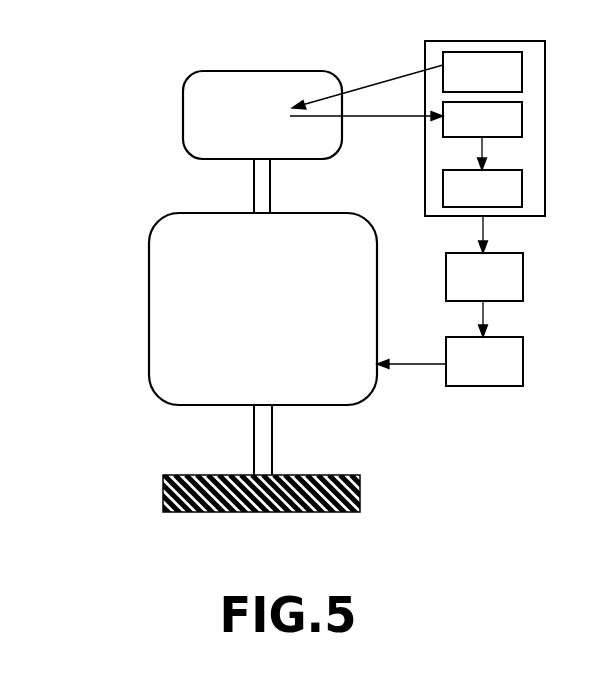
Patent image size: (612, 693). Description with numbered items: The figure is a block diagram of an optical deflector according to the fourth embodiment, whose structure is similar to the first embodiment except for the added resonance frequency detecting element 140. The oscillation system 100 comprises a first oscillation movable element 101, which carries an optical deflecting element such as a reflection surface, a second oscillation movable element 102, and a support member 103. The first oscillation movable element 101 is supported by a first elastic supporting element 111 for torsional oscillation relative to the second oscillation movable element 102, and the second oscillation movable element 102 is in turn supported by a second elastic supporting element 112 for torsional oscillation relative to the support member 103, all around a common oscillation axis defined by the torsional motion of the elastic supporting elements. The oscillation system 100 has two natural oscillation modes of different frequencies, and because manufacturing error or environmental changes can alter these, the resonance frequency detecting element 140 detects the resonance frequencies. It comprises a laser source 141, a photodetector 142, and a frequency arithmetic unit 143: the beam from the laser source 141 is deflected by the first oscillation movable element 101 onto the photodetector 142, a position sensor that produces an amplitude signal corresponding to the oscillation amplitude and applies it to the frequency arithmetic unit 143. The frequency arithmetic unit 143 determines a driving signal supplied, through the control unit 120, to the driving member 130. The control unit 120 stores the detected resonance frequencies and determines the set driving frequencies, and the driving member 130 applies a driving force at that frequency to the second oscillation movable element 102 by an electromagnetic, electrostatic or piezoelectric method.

The oscillation system 100 is at (130, 222).
The first oscillation movable element 101 is at (262, 115).
The second oscillation movable element 102 is at (263, 309).
The support member 103 is at (340, 494).
The first elastic supporting element 111 is at (250, 192).
The second elastic supporting element 112 is at (250, 447).
The control unit 120 is at (484, 258).
The driving member 130 is at (450, 343).
The resonance frequency detecting element 140 is at (417, 113).
The laser source 141 is at (482, 72).
The photodetector 142 is at (482, 119).
The frequency arithmetic unit 143 is at (482, 188).